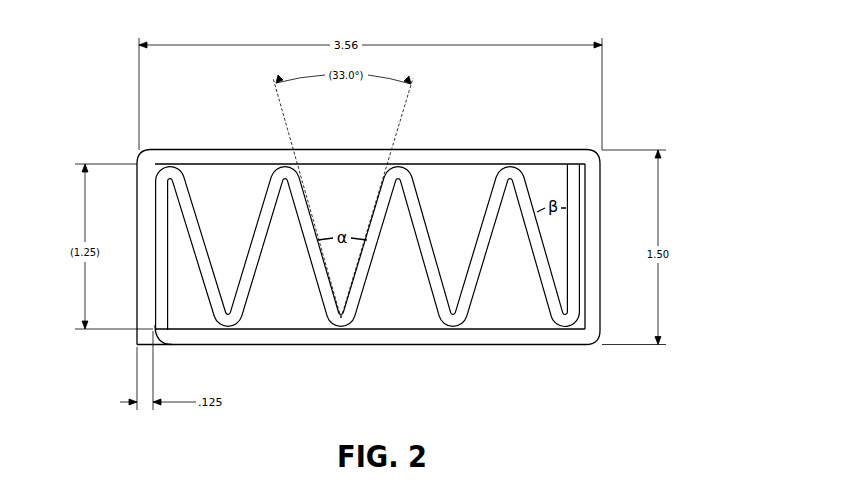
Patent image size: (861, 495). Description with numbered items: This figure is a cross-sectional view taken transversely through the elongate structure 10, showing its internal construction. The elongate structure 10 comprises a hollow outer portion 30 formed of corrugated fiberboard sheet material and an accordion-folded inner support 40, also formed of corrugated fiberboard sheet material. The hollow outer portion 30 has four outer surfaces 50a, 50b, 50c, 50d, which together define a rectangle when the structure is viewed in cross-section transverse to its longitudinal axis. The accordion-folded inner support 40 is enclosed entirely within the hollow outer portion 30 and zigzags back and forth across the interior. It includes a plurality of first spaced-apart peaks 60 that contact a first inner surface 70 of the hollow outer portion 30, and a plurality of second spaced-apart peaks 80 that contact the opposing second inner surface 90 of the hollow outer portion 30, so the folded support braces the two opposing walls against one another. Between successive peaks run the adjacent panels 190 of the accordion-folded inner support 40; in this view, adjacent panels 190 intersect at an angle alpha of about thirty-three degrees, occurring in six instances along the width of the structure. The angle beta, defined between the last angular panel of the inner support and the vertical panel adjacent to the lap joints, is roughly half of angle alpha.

The elongate structure 10 is at (712, 127).
The hollow outer portion 30 is at (372, 338).
The accordion-folded inner support 40 is at (437, 297).
The outer surface 50a is at (138, 258).
The outer surface 50b is at (478, 149).
The outer surface 50c is at (600, 228).
The outer surface 50d is at (267, 347).
The first spaced-apart peaks 60 is at (176, 164).
The first inner surface 70 is at (447, 168).
The second spaced-apart peaks 80 is at (228, 332).
The second inner surface 90 is at (294, 328).
The adjacent panels 190 is at (378, 193).